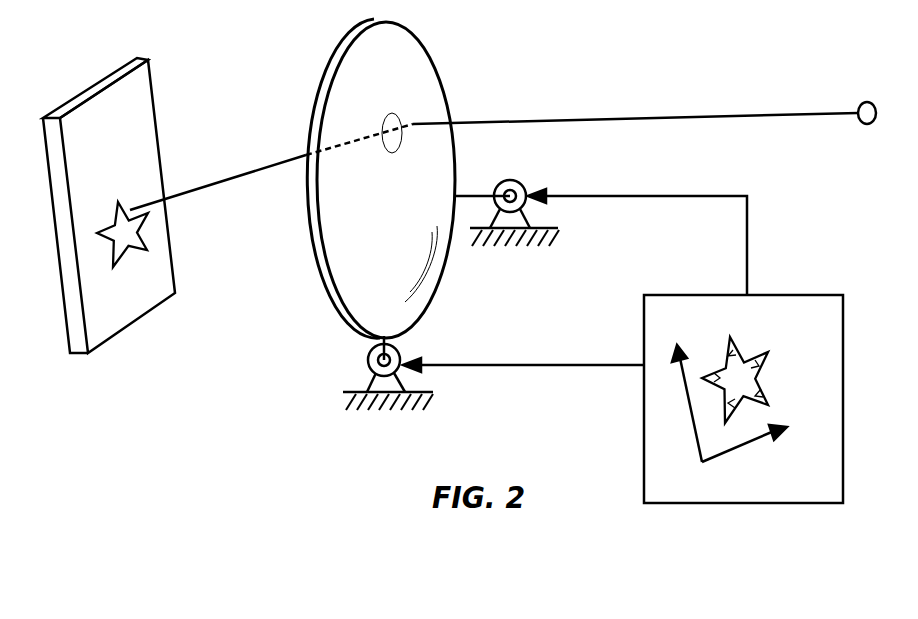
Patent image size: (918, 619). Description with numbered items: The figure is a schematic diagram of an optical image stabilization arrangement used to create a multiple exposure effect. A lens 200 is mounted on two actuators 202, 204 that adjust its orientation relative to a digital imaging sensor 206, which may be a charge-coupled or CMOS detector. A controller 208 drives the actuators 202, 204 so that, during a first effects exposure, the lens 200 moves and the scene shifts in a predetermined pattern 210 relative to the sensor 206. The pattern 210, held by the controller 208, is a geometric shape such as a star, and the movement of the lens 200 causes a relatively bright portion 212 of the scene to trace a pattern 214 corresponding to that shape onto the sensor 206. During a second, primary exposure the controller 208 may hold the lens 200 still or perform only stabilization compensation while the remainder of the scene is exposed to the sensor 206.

The lens 200 is at (382, 22).
The actuator 202 is at (368, 352).
The actuator 204 is at (503, 180).
The digital imaging sensor 206 is at (140, 57).
The controller 208 is at (815, 297).
The predetermined pattern 210 is at (737, 360).
The bright portion of the scene 212 is at (864, 102).
The traced pattern 214 is at (145, 250).